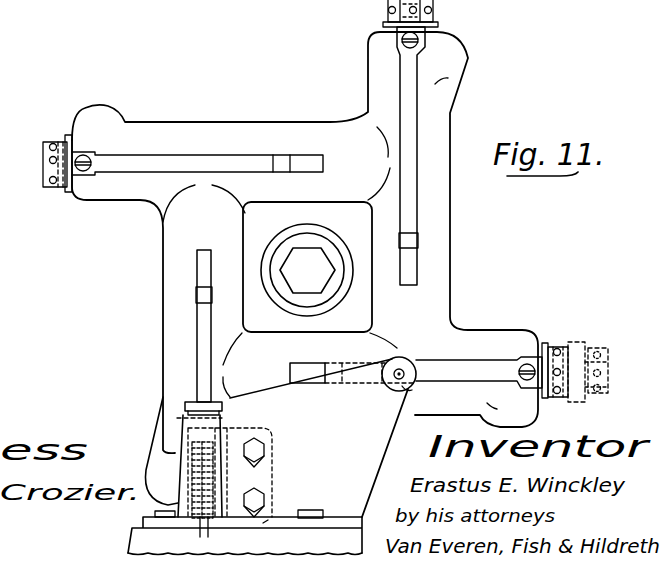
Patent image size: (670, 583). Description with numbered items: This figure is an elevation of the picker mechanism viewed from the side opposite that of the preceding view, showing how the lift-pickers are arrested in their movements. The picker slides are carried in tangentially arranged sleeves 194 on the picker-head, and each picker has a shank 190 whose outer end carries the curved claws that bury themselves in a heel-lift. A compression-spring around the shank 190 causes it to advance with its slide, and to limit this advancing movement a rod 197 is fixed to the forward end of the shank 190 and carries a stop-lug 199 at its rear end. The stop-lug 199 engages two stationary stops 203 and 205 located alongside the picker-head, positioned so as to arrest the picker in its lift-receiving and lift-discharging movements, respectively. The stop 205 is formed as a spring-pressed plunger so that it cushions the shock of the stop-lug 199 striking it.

The shank 190 is at (60, 188).
The sleeve 194 is at (207, 114).
The rod 197 is at (408, 183).
The stop-lug 199 is at (413, 245).
The stationary stop 203 is at (403, 390).
The stationary stop 205 is at (185, 422).